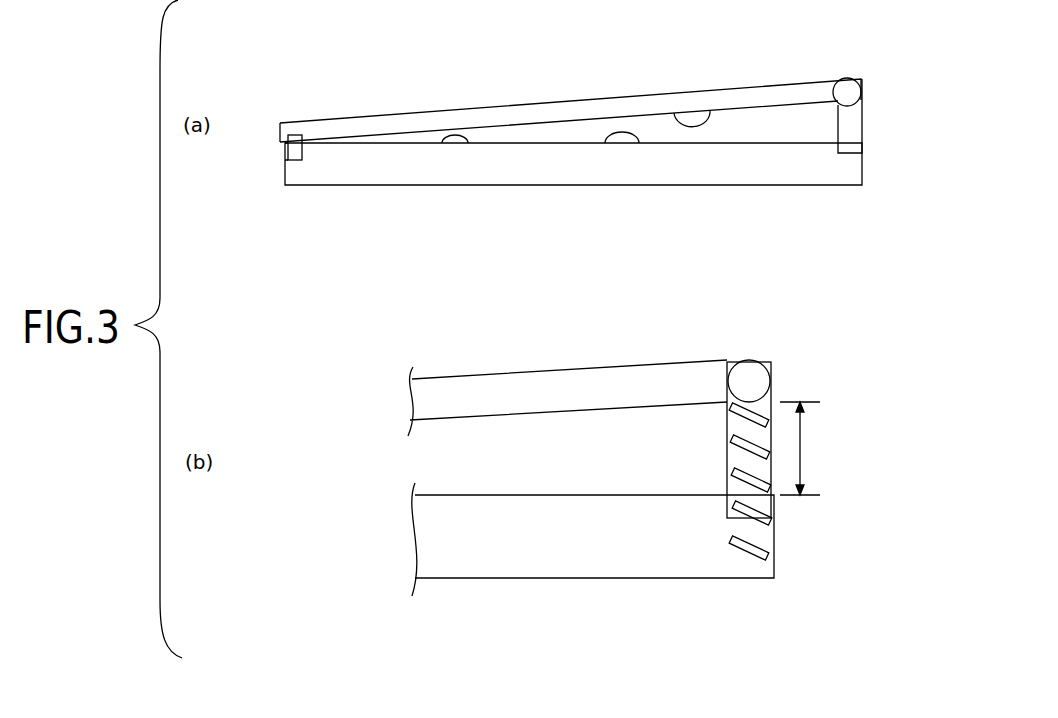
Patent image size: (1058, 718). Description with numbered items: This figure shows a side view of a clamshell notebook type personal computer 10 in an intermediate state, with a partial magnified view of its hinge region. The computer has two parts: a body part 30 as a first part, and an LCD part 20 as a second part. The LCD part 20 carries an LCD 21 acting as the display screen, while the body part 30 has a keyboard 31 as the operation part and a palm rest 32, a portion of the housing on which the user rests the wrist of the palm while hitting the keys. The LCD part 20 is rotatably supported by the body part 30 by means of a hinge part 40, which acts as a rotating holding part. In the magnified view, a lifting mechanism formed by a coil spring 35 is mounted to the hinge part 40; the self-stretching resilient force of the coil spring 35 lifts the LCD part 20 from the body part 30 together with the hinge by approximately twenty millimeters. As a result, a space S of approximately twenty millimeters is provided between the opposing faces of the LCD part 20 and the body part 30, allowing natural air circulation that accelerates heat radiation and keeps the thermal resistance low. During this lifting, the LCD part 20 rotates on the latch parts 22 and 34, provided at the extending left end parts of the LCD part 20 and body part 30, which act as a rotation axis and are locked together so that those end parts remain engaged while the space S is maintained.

The notebook type personal computer 10 is at (311, 56).
The LCD part 20 is at (540, 102).
The LCD 21 is at (708, 111).
The latch part 22 is at (285, 140).
The body part 30 is at (540, 186).
The keyboard 31 is at (640, 137).
The palm rest 32 is at (461, 144).
The latch part 34 is at (287, 156).
The coil spring 35 is at (773, 557).
The hinge part 40 is at (873, 72).
The space S is at (803, 448).